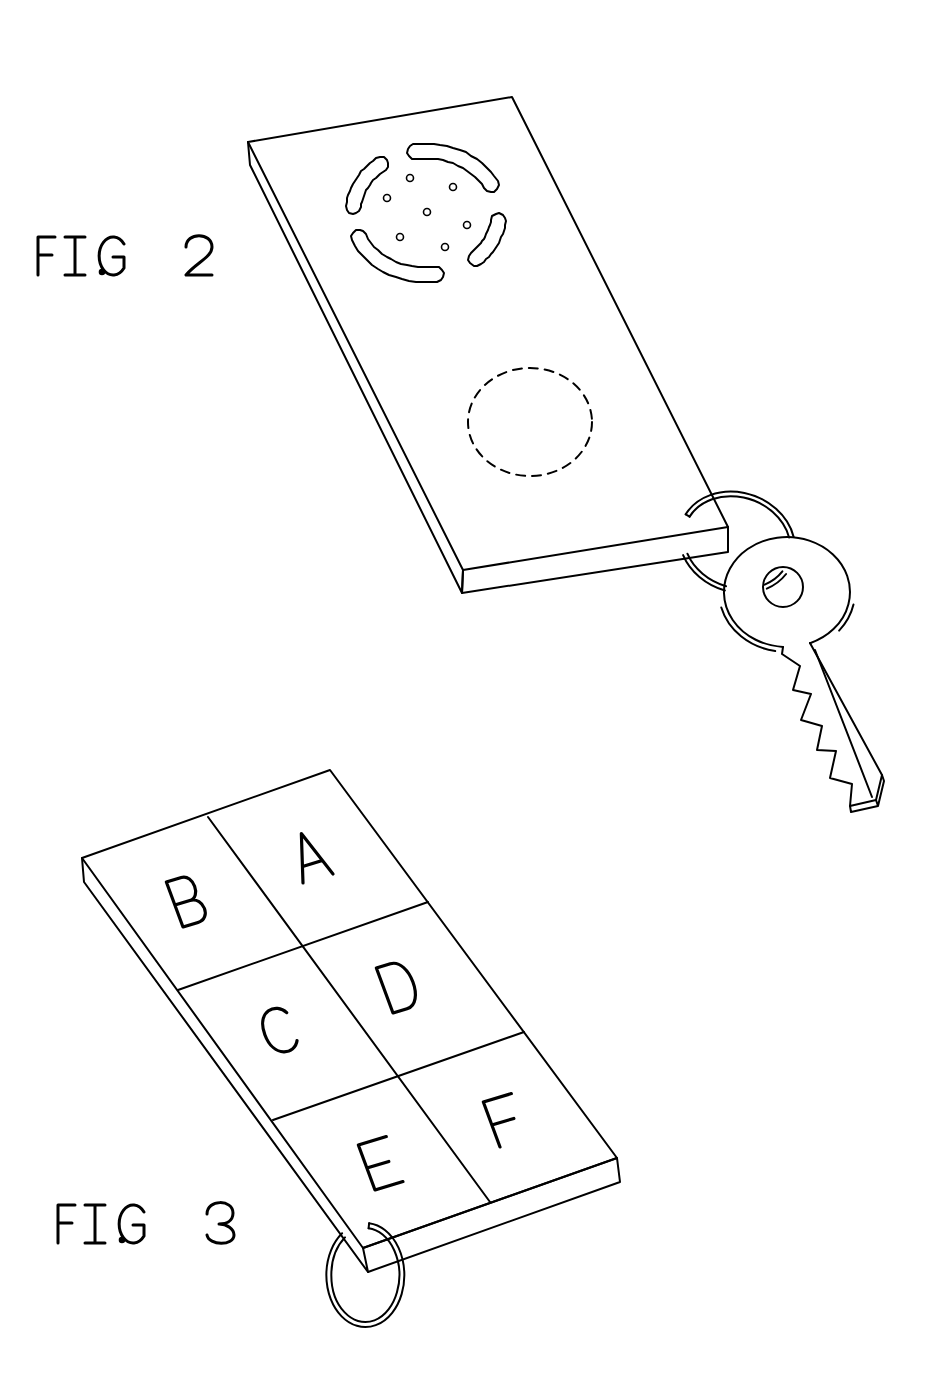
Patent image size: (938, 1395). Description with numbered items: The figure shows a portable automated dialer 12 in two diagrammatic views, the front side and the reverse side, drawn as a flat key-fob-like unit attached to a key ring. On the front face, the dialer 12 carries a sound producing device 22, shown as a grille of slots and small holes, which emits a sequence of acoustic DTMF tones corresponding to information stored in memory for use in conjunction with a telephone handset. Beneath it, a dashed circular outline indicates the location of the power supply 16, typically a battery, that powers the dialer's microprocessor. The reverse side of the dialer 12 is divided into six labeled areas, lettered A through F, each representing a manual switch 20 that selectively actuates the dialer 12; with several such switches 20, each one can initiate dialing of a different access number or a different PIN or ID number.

In FIG. 2, the portable automated dialer 12 is at (245, 28).
In FIG. 3, the portable automated dialer 12 is at (100, 1090).
In FIG. 2, the power supply 16 is at (688, 362).
In FIG. 3, the manual switch 20 is at (95, 760).
In FIG. 2, the sound producing device 22 is at (580, 135).